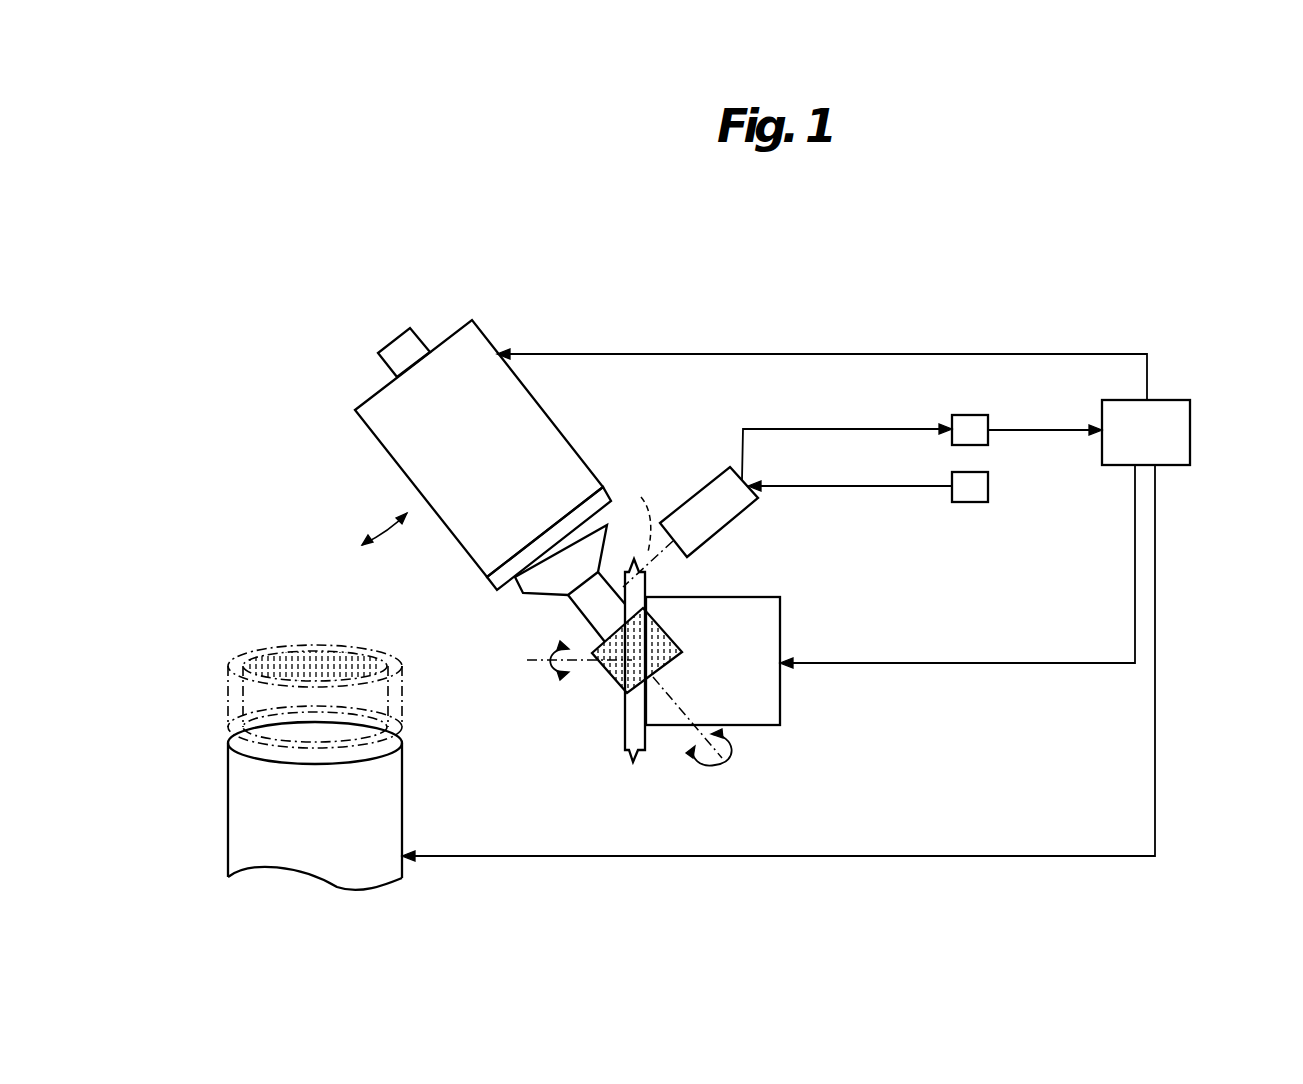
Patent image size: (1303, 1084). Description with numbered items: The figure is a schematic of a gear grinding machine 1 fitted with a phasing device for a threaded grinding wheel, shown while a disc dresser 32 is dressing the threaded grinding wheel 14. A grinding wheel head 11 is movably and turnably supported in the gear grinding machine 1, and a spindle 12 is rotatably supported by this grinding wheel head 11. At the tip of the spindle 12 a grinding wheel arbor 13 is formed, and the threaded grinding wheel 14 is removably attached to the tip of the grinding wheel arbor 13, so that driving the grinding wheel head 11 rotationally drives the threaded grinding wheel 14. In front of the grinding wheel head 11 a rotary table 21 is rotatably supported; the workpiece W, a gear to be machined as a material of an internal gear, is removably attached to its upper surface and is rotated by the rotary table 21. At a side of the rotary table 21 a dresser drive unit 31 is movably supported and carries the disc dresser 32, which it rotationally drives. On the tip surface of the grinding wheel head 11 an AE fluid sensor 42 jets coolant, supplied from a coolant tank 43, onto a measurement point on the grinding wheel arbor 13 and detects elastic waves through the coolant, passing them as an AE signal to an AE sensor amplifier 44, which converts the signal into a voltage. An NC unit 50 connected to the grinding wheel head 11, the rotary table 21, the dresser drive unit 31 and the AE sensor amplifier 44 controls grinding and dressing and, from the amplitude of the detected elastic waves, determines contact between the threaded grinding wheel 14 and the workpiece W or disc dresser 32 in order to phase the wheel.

The gear grinding machine 1 is at (788, 297).
The grinding wheel head 11 is at (380, 445).
The spindle 12 is at (518, 588).
The grinding wheel arbor 13 is at (570, 608).
The threaded grinding wheel 14 is at (602, 673).
The rotary table 21 is at (228, 800).
The dresser drive unit 31 is at (760, 728).
The disc dresser 32 is at (643, 750).
The AE fluid sensor 42 is at (707, 490).
The coolant tank 43 is at (977, 502).
The AE sensor amplifier 44 is at (988, 415).
The NC unit 50 is at (1190, 430).
The workpiece W is at (228, 693).